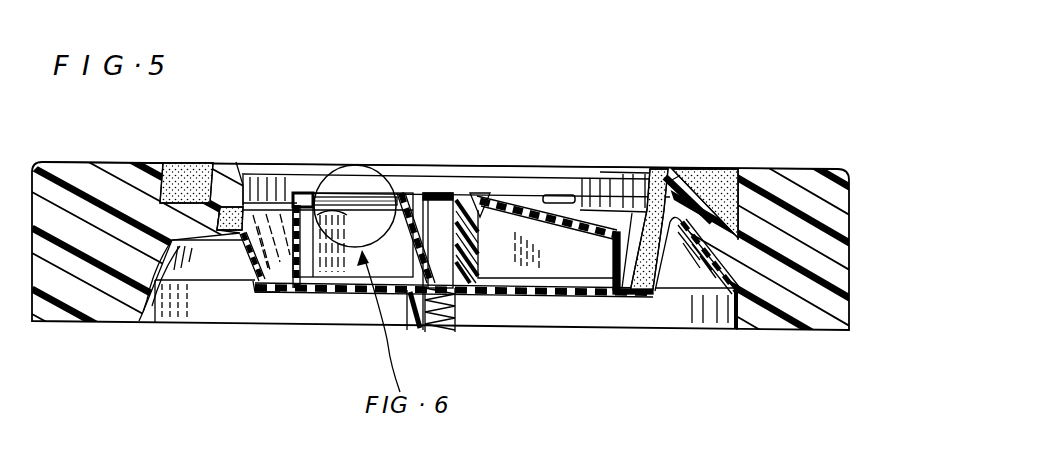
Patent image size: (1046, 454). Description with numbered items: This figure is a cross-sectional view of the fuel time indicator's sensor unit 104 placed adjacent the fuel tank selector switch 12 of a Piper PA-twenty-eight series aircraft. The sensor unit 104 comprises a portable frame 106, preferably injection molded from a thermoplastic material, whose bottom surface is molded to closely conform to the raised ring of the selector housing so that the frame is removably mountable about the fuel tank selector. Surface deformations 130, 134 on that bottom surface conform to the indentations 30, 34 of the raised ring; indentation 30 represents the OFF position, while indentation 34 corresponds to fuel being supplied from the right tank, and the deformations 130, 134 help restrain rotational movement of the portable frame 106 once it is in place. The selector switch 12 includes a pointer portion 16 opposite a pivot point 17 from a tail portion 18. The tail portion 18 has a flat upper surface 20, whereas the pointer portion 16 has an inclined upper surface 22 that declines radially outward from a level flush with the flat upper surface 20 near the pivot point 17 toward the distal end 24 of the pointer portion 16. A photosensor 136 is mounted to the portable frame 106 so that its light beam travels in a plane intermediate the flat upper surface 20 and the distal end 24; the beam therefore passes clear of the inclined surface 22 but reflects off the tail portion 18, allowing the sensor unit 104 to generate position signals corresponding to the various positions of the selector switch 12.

The fuel tank selector switch 12 is at (385, 192).
The pointer portion 16 is at (580, 267).
The pivot point 17 is at (447, 193).
The tail portion 18 is at (345, 267).
The flat upper surface 20 is at (343, 195).
The inclined upper surface 22 is at (592, 214).
The distal end 24 is at (613, 294).
The indentation 30 is at (680, 284).
The indentation 34 is at (225, 270).
The sensor unit 104 is at (852, 226).
The portable frame 106 is at (793, 169).
The surface deformation 130 is at (683, 190).
The surface deformation 134 is at (233, 166).
The photosensor 136 is at (563, 193).